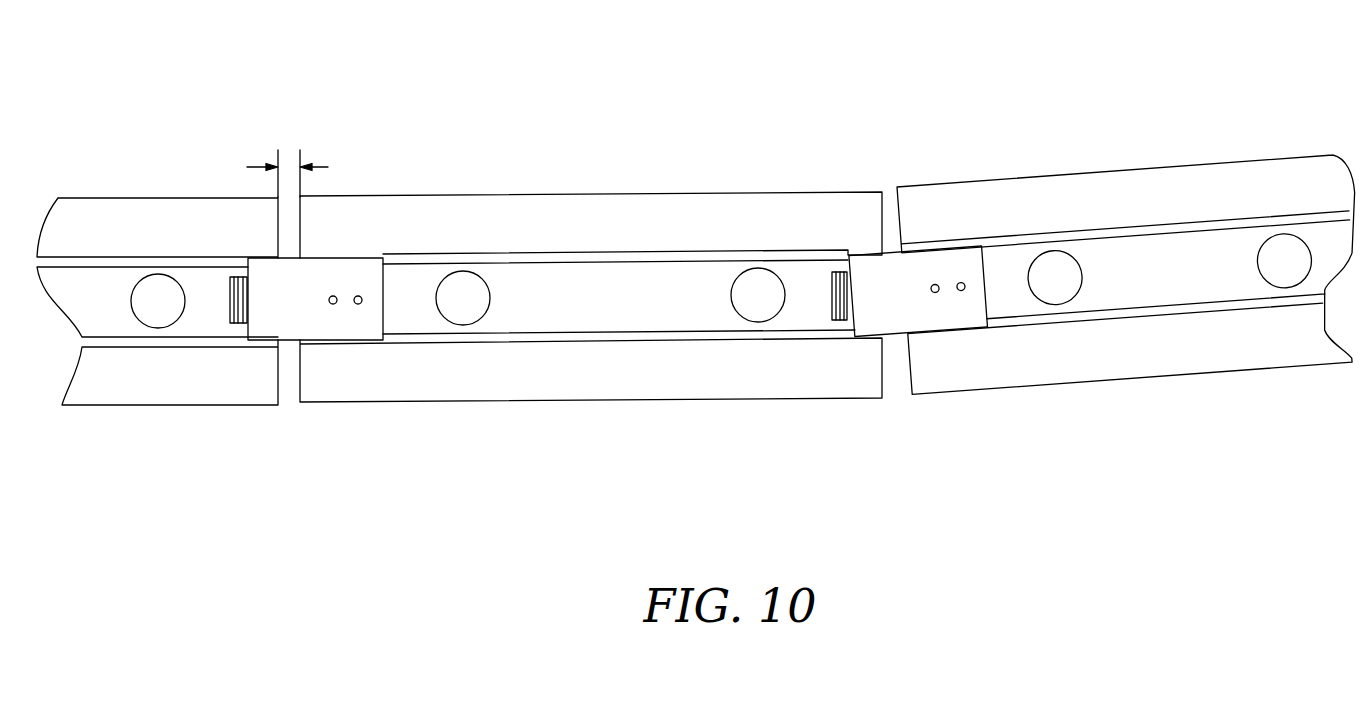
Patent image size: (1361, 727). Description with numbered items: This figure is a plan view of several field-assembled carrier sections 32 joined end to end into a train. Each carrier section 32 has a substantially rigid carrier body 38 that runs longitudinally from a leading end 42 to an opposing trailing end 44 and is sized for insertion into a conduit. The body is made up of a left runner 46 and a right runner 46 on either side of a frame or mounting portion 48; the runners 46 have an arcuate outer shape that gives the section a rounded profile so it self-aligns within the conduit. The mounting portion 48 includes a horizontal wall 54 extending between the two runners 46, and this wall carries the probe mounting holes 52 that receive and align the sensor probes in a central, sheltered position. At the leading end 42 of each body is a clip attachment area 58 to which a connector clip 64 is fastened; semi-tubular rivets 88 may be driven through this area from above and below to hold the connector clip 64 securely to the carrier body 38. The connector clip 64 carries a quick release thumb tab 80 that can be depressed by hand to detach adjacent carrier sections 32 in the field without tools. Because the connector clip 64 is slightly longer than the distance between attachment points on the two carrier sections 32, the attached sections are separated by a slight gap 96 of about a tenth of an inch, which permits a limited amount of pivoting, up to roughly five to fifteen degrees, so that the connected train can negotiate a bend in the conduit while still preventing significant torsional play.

The carrier section 32 is at (667, 136).
The carrier body 38 is at (431, 191).
The leading end 42 is at (300, 374).
The trailing end 44 is at (278, 404).
The runner 46 is at (141, 237).
The mounting portion 48 is at (205, 320).
The probe mounting hole 52 is at (142, 292).
The horizontal wall 54 is at (189, 275).
The clip attachment area 58 is at (922, 248).
The connector clip 64 is at (350, 325).
The quick release thumb tab 80 is at (233, 290).
The semi-tubular rivet 88 is at (358, 294).
The gap 96 is at (278, 152).